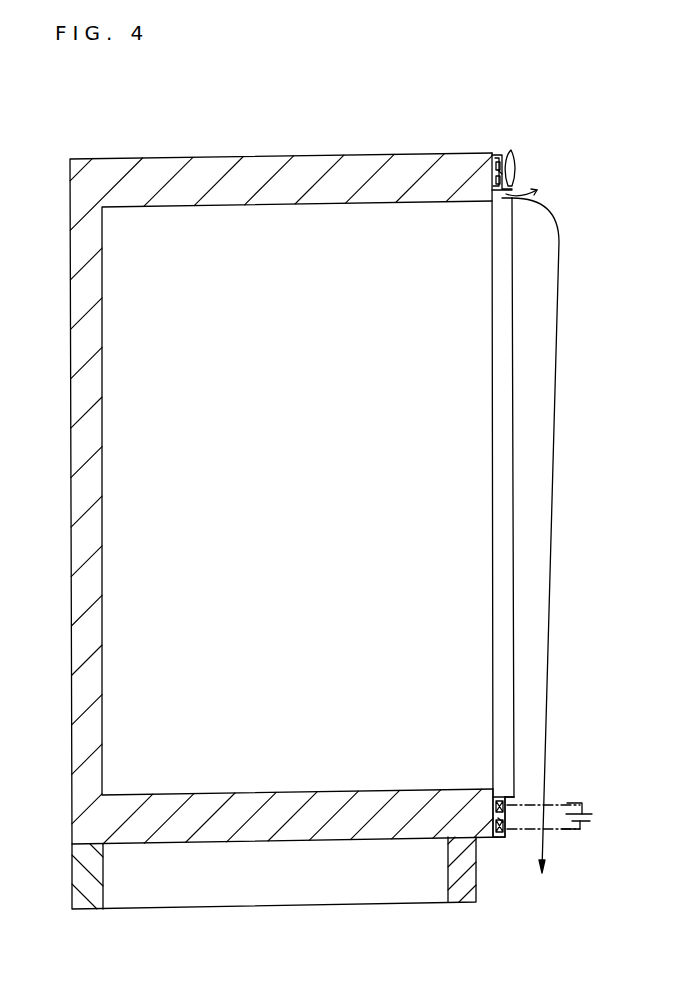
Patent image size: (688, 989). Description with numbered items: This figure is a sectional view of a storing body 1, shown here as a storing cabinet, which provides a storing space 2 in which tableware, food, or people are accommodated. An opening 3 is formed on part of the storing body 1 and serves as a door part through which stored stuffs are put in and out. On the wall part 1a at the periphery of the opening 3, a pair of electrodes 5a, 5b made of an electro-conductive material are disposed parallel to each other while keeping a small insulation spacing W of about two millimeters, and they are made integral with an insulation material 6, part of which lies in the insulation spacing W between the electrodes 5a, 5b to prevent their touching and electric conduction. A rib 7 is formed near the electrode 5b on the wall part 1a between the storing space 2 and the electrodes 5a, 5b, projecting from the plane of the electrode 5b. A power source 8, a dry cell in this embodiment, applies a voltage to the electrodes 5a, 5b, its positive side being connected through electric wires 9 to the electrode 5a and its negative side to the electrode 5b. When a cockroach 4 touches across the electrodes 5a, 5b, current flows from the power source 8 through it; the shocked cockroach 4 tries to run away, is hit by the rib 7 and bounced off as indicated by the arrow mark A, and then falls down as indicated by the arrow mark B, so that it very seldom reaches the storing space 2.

The storing body 1 is at (65, 502).
The wall part 1a is at (494, 790).
The storing space 2 is at (282, 528).
The opening 3 is at (488, 547).
The cockroach 4 is at (517, 166).
The electrode 5a is at (497, 157).
The electrode 5b is at (492, 176).
The insulation material 6 is at (492, 192).
The rib 7 is at (514, 198).
The power source 8 is at (588, 805).
The electric wires 9 is at (563, 836).
The arrow mark A is at (531, 183).
The arrow mark B is at (562, 232).
The insulation spacing W is at (500, 172).